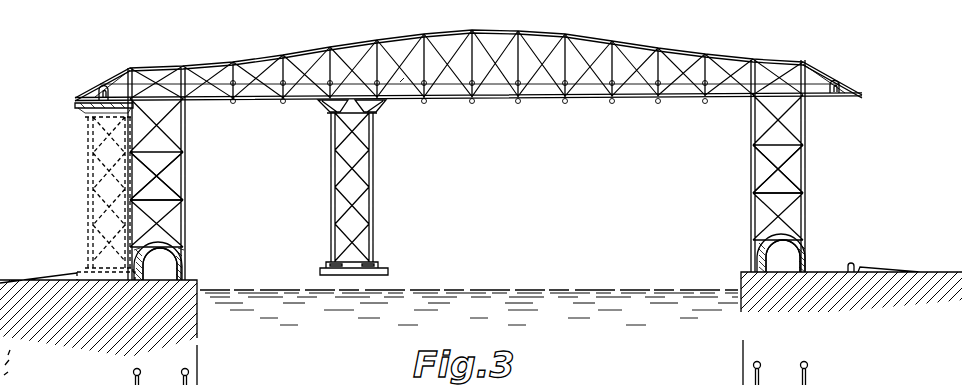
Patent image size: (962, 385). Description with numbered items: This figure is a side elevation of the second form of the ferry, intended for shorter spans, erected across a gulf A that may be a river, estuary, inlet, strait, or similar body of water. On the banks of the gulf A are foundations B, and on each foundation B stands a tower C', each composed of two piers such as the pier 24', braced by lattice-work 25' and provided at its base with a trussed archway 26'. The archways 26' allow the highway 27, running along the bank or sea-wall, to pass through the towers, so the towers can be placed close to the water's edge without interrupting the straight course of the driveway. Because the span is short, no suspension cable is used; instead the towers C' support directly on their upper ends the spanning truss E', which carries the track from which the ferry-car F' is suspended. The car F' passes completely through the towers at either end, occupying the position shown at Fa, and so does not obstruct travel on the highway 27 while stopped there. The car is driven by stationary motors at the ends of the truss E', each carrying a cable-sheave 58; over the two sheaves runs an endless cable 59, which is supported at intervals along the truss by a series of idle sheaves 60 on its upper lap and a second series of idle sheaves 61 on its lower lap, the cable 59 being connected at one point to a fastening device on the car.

The spanning truss E' is at (468, 54).
The idle sheaves 60 is at (283, 81).
The idle sheaves 61 is at (517, 103).
The endless cable 59 is at (402, 79).
The cable-sheave 58 is at (103, 93).
The towers C' is at (483, 170).
The pier 24' is at (466, 205).
The lattice-work 25' is at (484, 164).
The trussed archways 26' is at (486, 257).
The highways 27 is at (471, 260).
The ferry-car F' is at (360, 187).
The car end position Fa is at (88, 181).
The foundations B is at (197, 282).
The gulf A is at (469, 289).